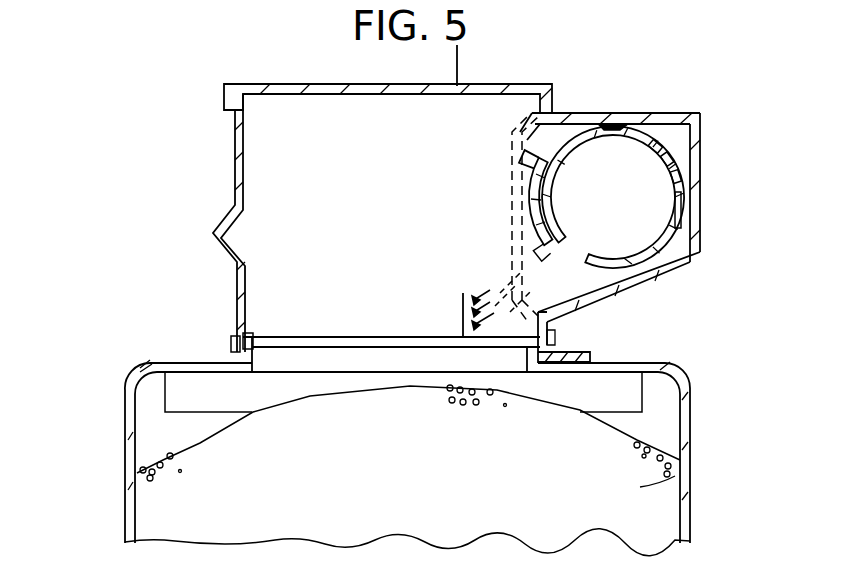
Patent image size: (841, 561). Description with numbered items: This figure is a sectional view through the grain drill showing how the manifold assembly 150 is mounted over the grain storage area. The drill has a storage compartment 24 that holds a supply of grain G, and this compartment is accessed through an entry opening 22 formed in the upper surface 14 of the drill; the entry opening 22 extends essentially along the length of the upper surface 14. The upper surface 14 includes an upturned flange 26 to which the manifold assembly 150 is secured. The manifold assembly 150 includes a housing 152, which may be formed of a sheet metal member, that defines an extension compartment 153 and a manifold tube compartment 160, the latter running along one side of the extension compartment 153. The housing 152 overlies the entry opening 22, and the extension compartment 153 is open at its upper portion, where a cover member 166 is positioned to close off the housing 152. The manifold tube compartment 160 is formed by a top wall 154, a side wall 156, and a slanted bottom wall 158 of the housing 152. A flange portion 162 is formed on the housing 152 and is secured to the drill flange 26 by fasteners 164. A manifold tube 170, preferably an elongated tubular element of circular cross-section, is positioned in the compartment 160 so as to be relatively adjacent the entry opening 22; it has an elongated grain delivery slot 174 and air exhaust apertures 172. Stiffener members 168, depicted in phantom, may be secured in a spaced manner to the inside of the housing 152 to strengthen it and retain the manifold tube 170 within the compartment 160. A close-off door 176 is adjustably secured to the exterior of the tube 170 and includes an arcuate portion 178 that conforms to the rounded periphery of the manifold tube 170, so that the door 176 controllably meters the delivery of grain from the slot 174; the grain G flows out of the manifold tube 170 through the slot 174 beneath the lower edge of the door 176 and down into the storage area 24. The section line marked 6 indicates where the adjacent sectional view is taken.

The section line 6- 6 is at (450, 55).
The upper surface 14 is at (182, 364).
The entry opening 22 is at (297, 362).
The storage compartment 24 is at (665, 413).
The upturned flange 26 is at (252, 335).
The grain G is at (675, 476).
The manifold assembly 150 is at (152, 120).
The housing 152 is at (237, 178).
The extension compartment 153 is at (256, 160).
The top wall 154 is at (655, 112).
The side wall 156 is at (703, 175).
The slanted bottom wall 158 is at (700, 268).
The manifold tube compartment 160 is at (688, 228).
The flange portion 162 is at (565, 351).
The fasteners 164 is at (228, 338).
The cover member 166 is at (305, 90).
The stiffener members 168 is at (512, 252).
The manifold tube 170 is at (596, 122).
The air exhaust apertures 172 is at (683, 116).
The grain delivery slot 174 is at (560, 263).
The door 176 is at (515, 176).
The arcuate portion 178 is at (532, 223).